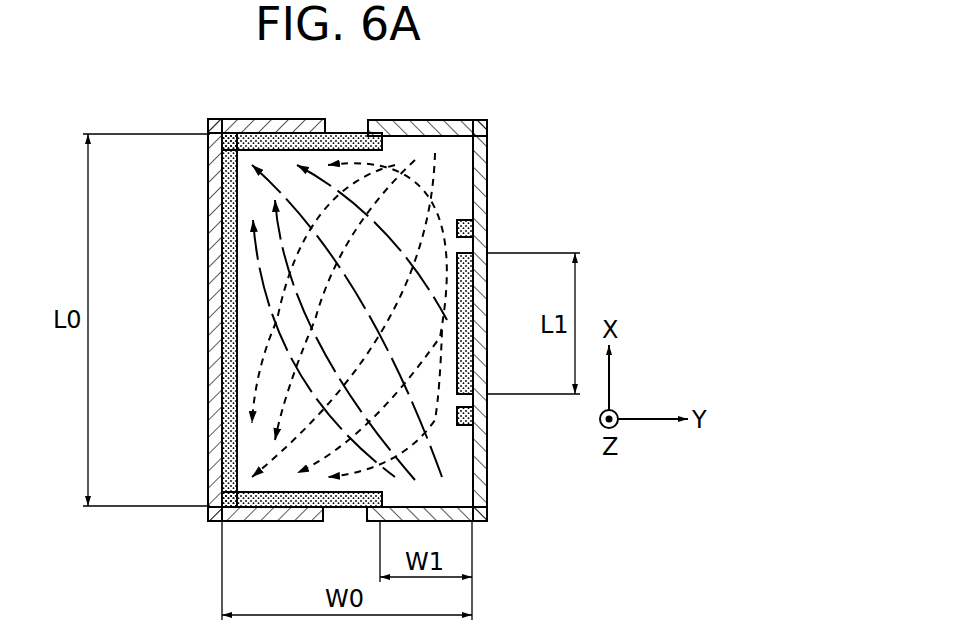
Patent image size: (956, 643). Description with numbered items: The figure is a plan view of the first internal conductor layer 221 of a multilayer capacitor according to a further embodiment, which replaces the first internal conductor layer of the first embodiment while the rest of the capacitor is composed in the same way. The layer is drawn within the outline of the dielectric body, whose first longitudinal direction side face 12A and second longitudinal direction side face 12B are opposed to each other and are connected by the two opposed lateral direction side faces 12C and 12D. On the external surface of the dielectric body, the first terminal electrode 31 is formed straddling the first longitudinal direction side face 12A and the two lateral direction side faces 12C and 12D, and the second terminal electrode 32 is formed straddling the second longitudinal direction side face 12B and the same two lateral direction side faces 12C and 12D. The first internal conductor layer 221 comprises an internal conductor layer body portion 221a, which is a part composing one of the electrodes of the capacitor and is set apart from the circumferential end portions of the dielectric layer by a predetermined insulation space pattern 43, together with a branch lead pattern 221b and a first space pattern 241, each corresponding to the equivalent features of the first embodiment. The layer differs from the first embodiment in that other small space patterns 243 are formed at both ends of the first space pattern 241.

The first longitudinal direction side face 12A is at (487, 453).
The second longitudinal direction side face 12B is at (218, 408).
The lateral direction side face 12C is at (347, 517).
The lateral direction side face 12D is at (349, 133).
The first terminal electrode 31 is at (478, 475).
The second terminal electrode 32 is at (213, 257).
The insulation space pattern 43 is at (271, 140).
The first internal conductor layer 221 is at (452, 200).
The internal conductor layer body portion 221a is at (245, 322).
The branch lead pattern 221b is at (438, 215).
The first space pattern 241 is at (465, 272).
The small space patterns 243 is at (470, 228).